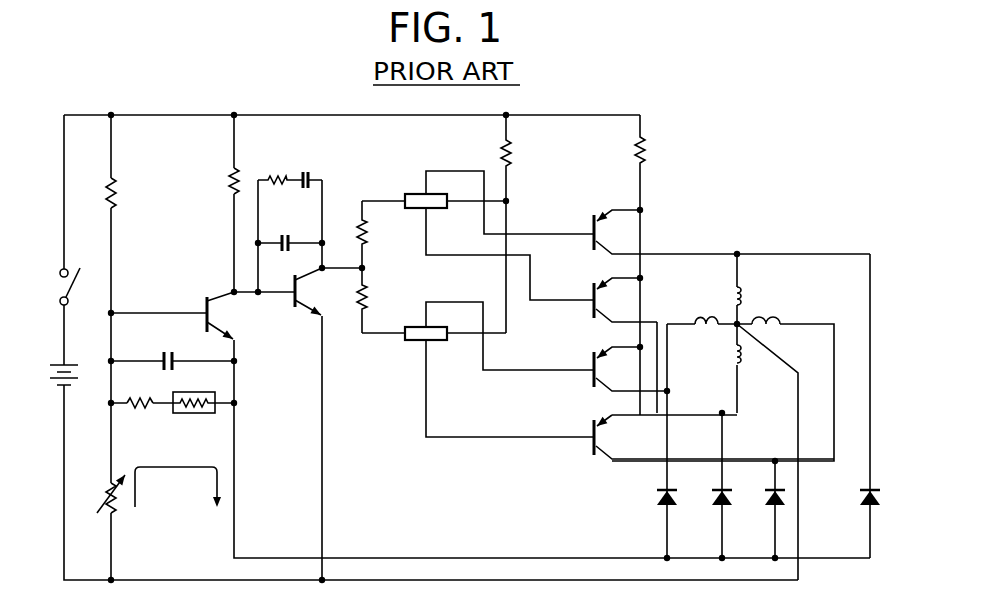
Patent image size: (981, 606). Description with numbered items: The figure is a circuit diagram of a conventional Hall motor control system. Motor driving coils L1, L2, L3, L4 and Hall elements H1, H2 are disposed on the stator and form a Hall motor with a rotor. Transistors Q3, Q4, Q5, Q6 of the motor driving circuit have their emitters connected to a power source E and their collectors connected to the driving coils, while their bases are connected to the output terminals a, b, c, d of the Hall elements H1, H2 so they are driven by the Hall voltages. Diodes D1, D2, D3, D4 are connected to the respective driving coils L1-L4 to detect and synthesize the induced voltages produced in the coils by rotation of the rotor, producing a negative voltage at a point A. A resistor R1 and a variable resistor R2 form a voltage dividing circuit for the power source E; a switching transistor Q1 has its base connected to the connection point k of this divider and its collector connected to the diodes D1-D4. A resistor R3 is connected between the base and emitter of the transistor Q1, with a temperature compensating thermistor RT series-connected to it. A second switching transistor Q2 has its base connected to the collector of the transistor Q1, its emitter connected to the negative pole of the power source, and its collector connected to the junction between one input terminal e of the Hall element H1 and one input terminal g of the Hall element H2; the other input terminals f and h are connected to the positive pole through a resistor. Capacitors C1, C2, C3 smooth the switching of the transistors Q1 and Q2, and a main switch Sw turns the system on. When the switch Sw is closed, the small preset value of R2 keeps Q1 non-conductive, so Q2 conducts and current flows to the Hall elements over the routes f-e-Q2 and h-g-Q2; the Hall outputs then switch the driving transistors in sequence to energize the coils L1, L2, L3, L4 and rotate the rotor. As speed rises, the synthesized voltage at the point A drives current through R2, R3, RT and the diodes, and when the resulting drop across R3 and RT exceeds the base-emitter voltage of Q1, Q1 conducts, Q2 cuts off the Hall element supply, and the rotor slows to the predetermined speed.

The main switch Sw is at (60, 282).
The connection point k is at (108, 313).
The power source E is at (48, 370).
The resistor R1 is at (118, 192).
The variable resistor R2 is at (118, 505).
The resistor R3 is at (140, 410).
The temperature compensating thermistor RT is at (190, 415).
The capacitor C1 is at (168, 349).
The capacitor C2 is at (285, 235).
The capacitor C3 is at (303, 172).
The switching transistor Q1 is at (215, 313).
The switching transistor Q2 is at (304, 309).
The transistor Q3 is at (611, 213).
The transistor Q4 is at (606, 284).
The transistor Q5 is at (605, 352).
The transistor Q6 is at (601, 458).
The Hall element H1 is at (408, 194).
The Hall element H2 is at (410, 342).
The output terminal a is at (426, 178).
The output terminal b is at (425, 236).
The output terminal c is at (424, 300).
The output terminal d is at (436, 342).
The input terminal e is at (404, 201).
The input terminal f is at (447, 208).
The input terminal g is at (405, 326).
The input terminal h is at (448, 341).
The motor driving coil L1 is at (742, 288).
The motor driving coil L2 is at (698, 317).
The motor driving coil L3 is at (734, 358).
The motor driving coil L4 is at (775, 318).
The point A is at (772, 352).
The diode D1 is at (864, 504).
The diode D2 is at (658, 504).
The diode D3 is at (714, 504).
The diode D4 is at (767, 504).